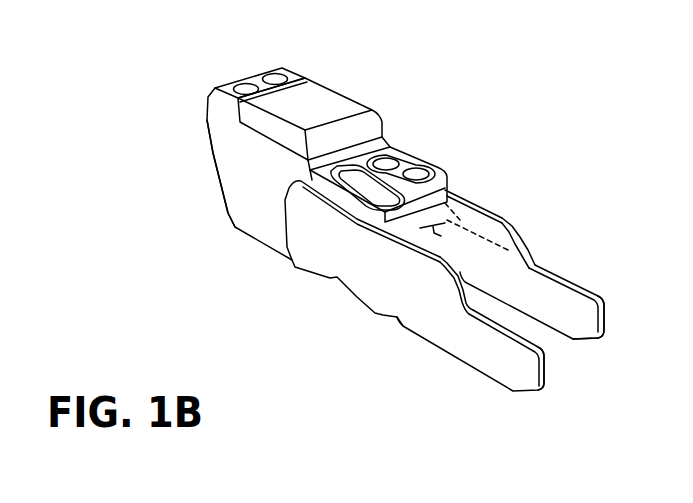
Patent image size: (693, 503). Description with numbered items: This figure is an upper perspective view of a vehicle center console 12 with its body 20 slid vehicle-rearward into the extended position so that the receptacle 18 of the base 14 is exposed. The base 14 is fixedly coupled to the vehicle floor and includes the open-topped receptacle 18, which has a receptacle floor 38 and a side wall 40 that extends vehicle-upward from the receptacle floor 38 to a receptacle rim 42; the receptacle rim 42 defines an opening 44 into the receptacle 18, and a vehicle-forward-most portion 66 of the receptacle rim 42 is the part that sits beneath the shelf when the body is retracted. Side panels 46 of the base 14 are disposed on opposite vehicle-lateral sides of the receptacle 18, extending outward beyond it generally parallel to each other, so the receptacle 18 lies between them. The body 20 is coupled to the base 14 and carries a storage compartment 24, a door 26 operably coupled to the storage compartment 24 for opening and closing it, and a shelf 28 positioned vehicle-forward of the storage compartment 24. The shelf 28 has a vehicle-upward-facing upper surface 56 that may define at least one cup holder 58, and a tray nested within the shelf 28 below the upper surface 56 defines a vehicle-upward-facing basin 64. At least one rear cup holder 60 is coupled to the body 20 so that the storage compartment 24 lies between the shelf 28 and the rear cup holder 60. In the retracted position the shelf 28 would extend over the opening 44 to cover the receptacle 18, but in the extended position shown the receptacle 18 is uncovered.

The center console 12 is at (394, 76).
The base 14 is at (457, 356).
The receptacle 18 is at (560, 280).
The body 20 is at (214, 167).
The storage compartment 24 is at (260, 168).
The door 26 is at (327, 100).
The shelf 28 is at (377, 193).
The receptacle floor 38 is at (441, 206).
The side wall 40 is at (456, 257).
The receptacle rim 42 is at (515, 226).
The opening 44 is at (498, 215).
The side panels 46 is at (437, 318).
The upper surface 56 is at (377, 163).
The cup holder 58 is at (391, 159).
The rear cup holder 60 is at (274, 80).
The basin 64 is at (433, 228).
The vehicle-forward-most portion 66 is at (478, 265).